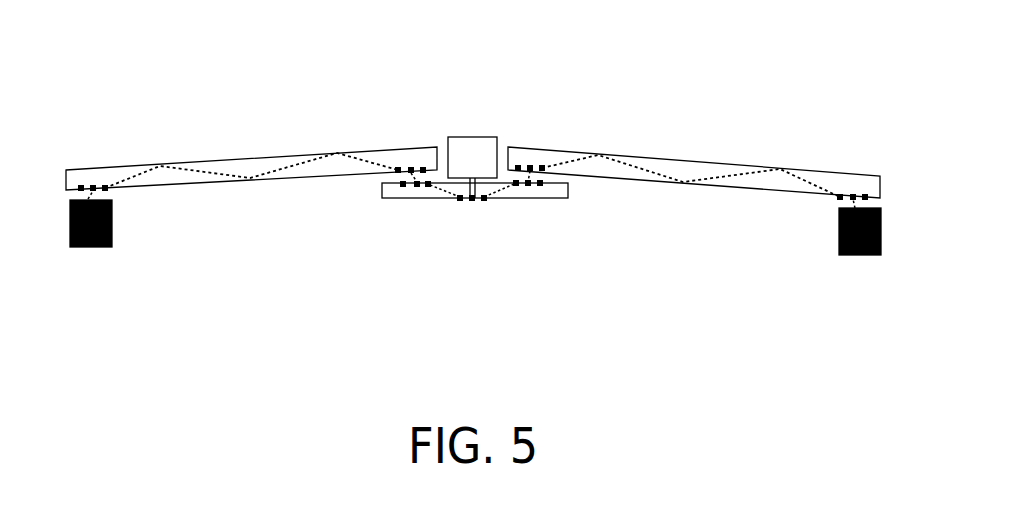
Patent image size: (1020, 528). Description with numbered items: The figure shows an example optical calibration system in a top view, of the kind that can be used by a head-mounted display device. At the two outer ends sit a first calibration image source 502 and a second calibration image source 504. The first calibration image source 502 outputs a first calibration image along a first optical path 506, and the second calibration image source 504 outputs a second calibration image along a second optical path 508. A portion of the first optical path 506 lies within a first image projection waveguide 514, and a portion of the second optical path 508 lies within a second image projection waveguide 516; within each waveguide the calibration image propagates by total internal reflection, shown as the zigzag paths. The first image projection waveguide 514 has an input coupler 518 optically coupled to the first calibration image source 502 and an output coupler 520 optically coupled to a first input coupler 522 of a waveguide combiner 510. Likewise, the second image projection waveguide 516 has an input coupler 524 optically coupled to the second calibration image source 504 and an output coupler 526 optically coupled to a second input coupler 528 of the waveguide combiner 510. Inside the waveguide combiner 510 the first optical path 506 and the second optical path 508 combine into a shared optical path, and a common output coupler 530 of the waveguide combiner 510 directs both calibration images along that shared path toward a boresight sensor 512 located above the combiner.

The first calibration image source 502 is at (70, 219).
The second calibration image source 504 is at (881, 225).
The first optical path 506 is at (208, 176).
The second optical path 508 is at (653, 173).
The waveguide combiner 510 is at (518, 198).
The boresight sensor 512 is at (472, 137).
The first image projection waveguide 514 is at (218, 160).
The second image projection waveguide 516 is at (822, 172).
The input coupler 518 is at (107, 190).
The output coupler 520 is at (426, 170).
The first input coupler 522 is at (406, 187).
The input coupler 524 is at (840, 200).
The output coupler 526 is at (515, 168).
The second input coupler 528 is at (542, 187).
The common output coupler 530 is at (460, 202).